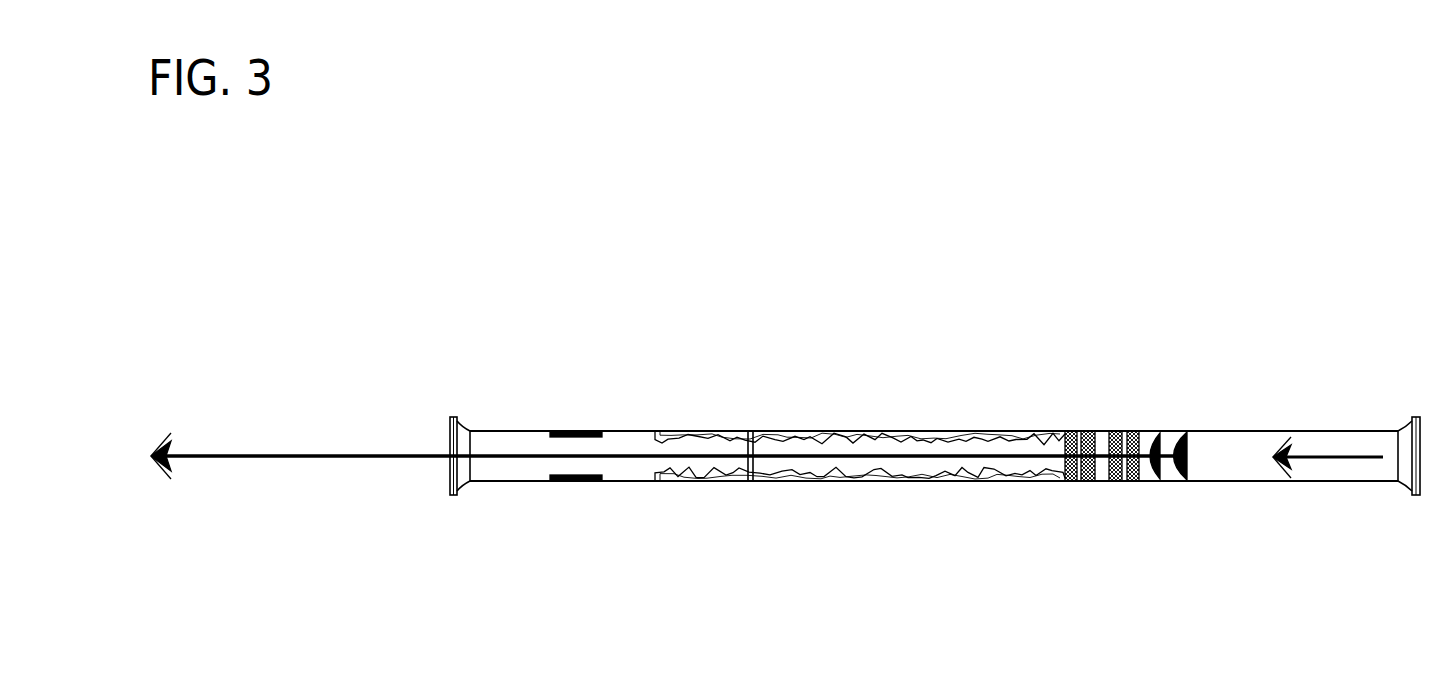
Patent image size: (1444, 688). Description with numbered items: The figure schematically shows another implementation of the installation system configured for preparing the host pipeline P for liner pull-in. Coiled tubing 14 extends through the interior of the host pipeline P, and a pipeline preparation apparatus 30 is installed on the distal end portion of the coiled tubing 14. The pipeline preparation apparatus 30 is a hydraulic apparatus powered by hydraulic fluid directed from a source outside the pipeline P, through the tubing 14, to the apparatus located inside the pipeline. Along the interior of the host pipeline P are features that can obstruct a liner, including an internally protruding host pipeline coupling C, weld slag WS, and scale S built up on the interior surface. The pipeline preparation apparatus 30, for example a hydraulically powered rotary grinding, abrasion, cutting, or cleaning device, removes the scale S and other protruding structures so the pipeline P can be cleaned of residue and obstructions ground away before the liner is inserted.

The coiled tubing 14 is at (331, 463).
The host pipeline coupling C is at (567, 490).
The host pipeline P is at (882, 422).
The weld slag WS is at (746, 491).
The scale S is at (857, 491).
The pipeline preparation apparatus 30 is at (1107, 491).